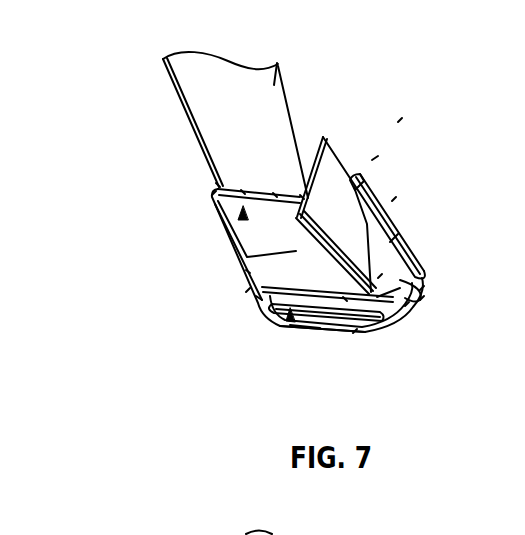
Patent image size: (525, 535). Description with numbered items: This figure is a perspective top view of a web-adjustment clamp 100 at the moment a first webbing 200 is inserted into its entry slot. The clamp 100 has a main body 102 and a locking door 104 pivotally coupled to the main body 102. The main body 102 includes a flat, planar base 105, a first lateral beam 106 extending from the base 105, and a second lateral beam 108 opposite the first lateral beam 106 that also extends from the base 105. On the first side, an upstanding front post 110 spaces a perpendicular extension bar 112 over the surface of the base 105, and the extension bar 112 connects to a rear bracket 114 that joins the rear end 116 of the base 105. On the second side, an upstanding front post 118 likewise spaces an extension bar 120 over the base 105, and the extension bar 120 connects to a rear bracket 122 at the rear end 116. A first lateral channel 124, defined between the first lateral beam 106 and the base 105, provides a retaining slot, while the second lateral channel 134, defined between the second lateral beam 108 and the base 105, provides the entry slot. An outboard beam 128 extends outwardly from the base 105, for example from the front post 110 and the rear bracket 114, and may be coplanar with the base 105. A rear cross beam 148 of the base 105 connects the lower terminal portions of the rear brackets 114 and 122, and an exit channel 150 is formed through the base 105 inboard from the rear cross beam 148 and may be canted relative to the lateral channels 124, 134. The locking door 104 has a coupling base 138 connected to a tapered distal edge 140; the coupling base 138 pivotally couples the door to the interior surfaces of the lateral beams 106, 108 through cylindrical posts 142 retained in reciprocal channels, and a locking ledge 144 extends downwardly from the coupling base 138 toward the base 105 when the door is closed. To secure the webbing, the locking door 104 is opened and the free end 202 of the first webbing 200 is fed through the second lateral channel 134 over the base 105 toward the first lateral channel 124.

The web-adjustment clamp 100 is at (375, 181).
The main body 102 is at (317, 330).
The locking door 104 is at (328, 138).
The base 105 is at (246, 292).
The first lateral beam 106 is at (317, 304).
The second lateral beam 108 is at (219, 187).
The front post 110 is at (256, 296).
The extension bar 112 is at (343, 298).
The rear bracket 114 is at (420, 300).
The rear end 116 is at (420, 290).
The front post 118 is at (213, 193).
The extension bar 120 is at (275, 195).
The rear bracket 122 is at (372, 160).
The first lateral channel 124 is at (290, 322).
The outboard beam 128 is at (353, 333).
The second lateral channel 134 is at (241, 220).
The coupling base 138 is at (378, 278).
The tapered distal edge 140 is at (398, 122).
The cylindrical posts 142 is at (300, 195).
The locking ledge 144 is at (243, 192).
The rear cross beam 148 is at (392, 201).
The exit channel 150 is at (388, 244).
The first webbing 200 is at (287, 64).
The free end 202 is at (246, 270).